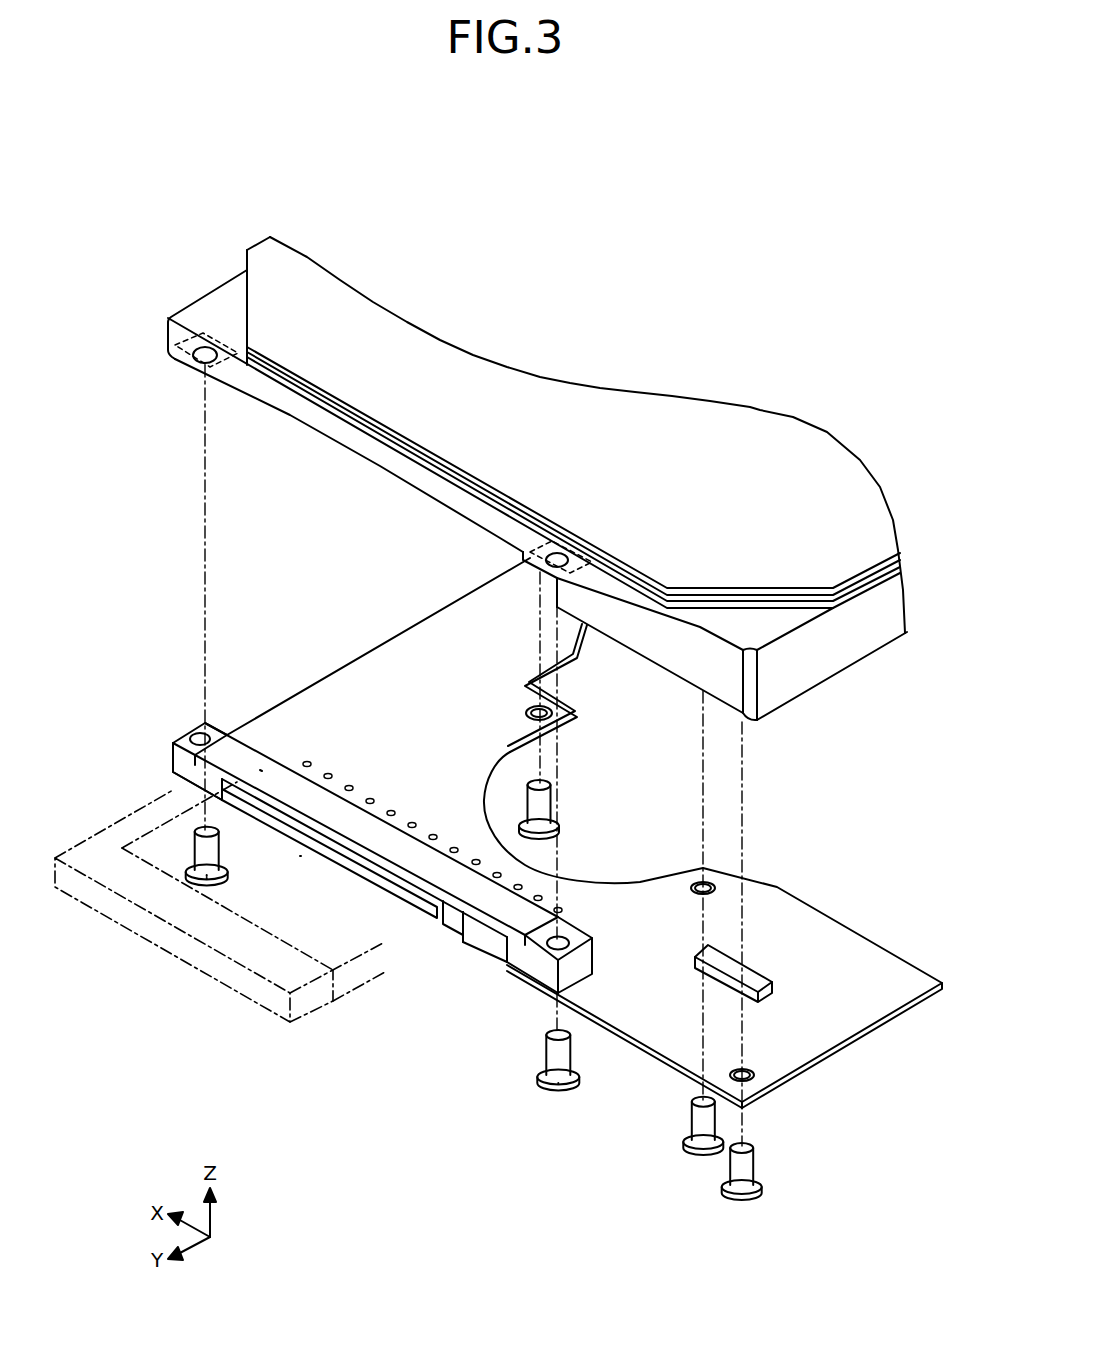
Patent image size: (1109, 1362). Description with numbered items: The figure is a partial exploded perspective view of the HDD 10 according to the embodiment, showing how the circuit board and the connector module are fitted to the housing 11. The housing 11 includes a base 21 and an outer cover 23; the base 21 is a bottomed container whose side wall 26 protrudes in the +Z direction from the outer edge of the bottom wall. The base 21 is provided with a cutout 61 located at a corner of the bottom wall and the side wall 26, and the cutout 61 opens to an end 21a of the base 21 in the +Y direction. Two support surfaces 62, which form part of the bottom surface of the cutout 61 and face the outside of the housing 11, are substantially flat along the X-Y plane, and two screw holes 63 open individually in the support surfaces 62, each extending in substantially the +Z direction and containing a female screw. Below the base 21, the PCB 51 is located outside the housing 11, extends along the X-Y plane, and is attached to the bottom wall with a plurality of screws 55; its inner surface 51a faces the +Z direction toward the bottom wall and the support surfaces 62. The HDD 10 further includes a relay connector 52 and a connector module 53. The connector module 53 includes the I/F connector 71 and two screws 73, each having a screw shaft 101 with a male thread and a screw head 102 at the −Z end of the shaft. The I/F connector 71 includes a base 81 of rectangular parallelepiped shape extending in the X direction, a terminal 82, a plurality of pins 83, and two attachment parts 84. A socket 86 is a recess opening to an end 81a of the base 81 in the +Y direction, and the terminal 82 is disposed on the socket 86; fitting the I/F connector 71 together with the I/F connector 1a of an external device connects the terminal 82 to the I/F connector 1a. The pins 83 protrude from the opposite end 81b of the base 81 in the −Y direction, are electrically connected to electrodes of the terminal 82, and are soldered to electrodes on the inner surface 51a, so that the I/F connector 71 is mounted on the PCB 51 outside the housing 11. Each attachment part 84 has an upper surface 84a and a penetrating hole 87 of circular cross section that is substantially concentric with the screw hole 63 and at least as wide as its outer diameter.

The HDD 10 is at (205, 176).
The housing 11 is at (200, 285).
The base 21 is at (193, 315).
The end of the base 21a is at (168, 343).
The outer cover 23 is at (788, 429).
The side wall 26 is at (873, 633).
The connector module 53 is at (265, 730).
The cutout 61 is at (290, 438).
The support surfaces 62 is at (180, 367).
The screw holes 63 is at (200, 373).
The I/F connector 71 is at (278, 770).
The screws 73 is at (204, 892).
The base 81 is at (483, 955).
The end of the base 81a is at (458, 915).
The end of the base 81b is at (333, 763).
The terminal 82 is at (365, 877).
The pins 83 is at (403, 807).
The attachment parts 84 is at (354, 877).
The upper surface 84a is at (183, 743).
The socket 86 is at (306, 858).
The penetrating hole 87 is at (203, 745).
The screw shaft 101 is at (212, 852).
The screw head 102 is at (222, 884).
The I/F connector 1a is at (247, 1000).
The printed circuit board 51 is at (713, 866).
The inner surface 51a is at (821, 927).
The relay connector 52 is at (760, 978).
The screws 55 is at (551, 798).